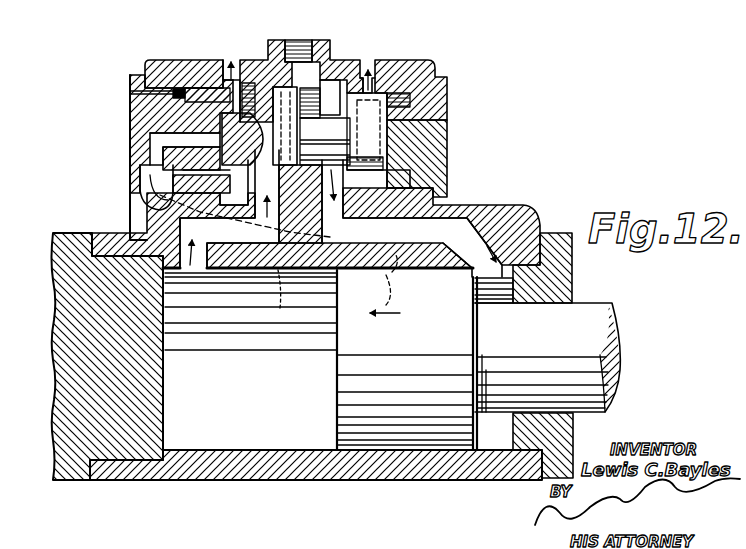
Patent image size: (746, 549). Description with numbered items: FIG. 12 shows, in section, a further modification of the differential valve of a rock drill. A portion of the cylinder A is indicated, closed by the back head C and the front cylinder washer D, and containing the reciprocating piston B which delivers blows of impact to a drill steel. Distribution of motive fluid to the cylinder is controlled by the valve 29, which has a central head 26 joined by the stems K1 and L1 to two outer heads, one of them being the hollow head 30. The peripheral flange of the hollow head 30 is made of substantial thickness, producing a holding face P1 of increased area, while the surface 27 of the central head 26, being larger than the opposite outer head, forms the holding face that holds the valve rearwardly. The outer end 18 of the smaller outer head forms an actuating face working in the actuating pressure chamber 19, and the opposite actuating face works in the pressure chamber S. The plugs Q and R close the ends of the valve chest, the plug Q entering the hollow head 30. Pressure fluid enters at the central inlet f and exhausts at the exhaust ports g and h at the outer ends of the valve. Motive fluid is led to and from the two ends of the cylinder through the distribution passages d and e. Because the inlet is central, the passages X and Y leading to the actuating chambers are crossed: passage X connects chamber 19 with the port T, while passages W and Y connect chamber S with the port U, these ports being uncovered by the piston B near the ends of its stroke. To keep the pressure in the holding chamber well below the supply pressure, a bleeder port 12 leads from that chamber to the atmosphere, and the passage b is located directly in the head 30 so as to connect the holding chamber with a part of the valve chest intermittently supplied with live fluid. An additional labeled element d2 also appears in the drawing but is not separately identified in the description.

The holding face P1 is at (165, 80).
The hollow head 30 is at (180, 90).
The bleeder port 12 is at (175, 92).
The plug Q is at (150, 113).
The passage W is at (155, 140).
The pressure chamber S is at (175, 160).
The passage b is at (160, 175).
The valve seat d2 is at (170, 185).
The distribution passage d is at (147, 222).
The exhaust port g is at (231, 60).
The stem K1 is at (242, 112).
The valve 29 is at (280, 120).
The inlet f is at (299, 38).
The central head 26 is at (330, 95).
The surface 27 is at (330, 125).
The exhaust port h is at (372, 77).
The stem L1 is at (392, 75).
The plug R is at (440, 115).
The actuating pressure face 18 is at (420, 140).
The actuating pressure chamber 19 is at (400, 176).
The distribution passage e is at (468, 232).
The front cylinder washer D is at (555, 290).
The passage Y is at (270, 230).
The port T is at (283, 280).
The passage X is at (350, 230).
The port U is at (398, 280).
The back head C is at (60, 478).
The piston B is at (360, 410).
The cylinder A is at (432, 478).